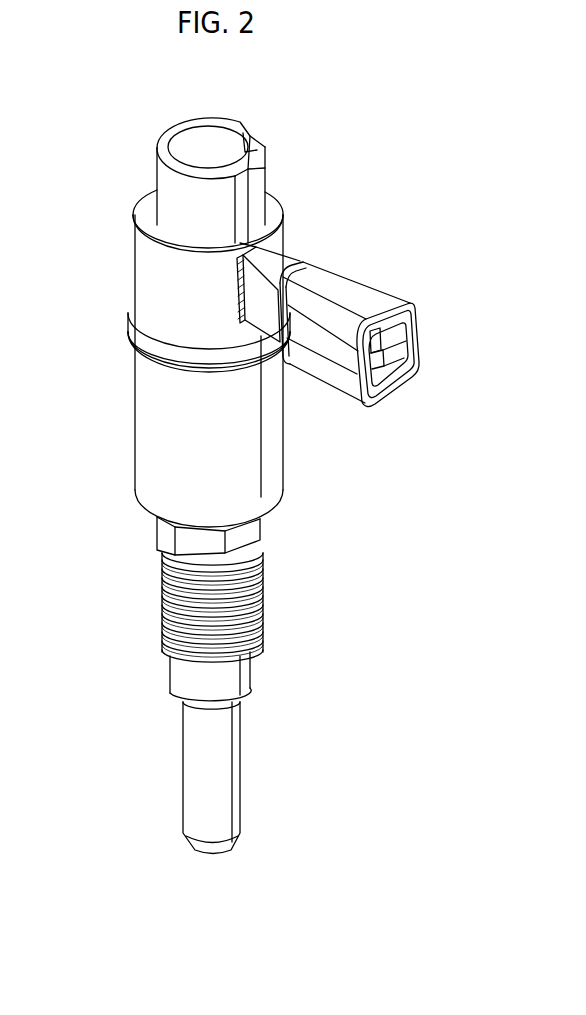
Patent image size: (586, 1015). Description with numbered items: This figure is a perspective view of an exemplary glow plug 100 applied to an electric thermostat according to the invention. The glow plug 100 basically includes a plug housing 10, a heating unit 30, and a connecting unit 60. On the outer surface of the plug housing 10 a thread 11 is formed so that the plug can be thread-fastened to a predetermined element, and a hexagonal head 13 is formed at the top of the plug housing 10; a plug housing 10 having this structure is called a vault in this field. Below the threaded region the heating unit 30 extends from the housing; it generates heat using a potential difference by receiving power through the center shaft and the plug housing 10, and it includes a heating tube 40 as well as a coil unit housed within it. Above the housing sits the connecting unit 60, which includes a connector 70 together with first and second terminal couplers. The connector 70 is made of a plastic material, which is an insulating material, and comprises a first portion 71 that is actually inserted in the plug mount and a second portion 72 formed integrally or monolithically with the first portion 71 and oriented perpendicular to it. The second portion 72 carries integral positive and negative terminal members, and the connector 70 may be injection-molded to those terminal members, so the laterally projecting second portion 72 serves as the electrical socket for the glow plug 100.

The glow plug 100 is at (232, 85).
The plug housing 10 is at (167, 661).
The thread 11 is at (265, 592).
The hexagonal head 13 is at (177, 541).
The heating unit 30 is at (183, 747).
The heating tube 40 is at (240, 745).
The connecting unit 60 is at (303, 241).
The connector 70 is at (345, 433).
The first portion 71 is at (250, 455).
The second portion 72 is at (332, 364).